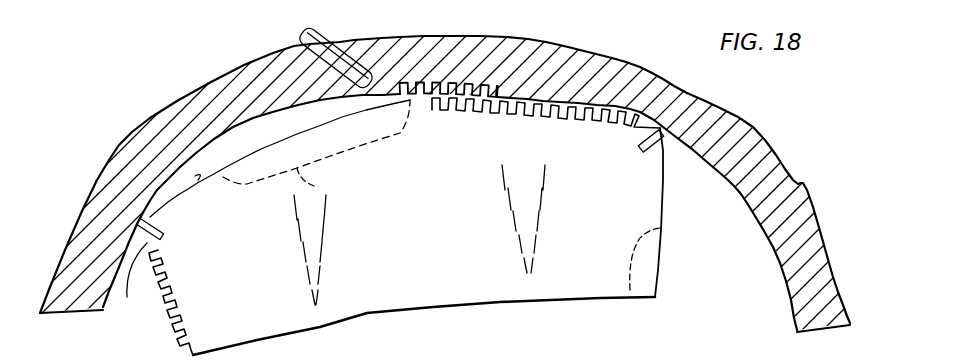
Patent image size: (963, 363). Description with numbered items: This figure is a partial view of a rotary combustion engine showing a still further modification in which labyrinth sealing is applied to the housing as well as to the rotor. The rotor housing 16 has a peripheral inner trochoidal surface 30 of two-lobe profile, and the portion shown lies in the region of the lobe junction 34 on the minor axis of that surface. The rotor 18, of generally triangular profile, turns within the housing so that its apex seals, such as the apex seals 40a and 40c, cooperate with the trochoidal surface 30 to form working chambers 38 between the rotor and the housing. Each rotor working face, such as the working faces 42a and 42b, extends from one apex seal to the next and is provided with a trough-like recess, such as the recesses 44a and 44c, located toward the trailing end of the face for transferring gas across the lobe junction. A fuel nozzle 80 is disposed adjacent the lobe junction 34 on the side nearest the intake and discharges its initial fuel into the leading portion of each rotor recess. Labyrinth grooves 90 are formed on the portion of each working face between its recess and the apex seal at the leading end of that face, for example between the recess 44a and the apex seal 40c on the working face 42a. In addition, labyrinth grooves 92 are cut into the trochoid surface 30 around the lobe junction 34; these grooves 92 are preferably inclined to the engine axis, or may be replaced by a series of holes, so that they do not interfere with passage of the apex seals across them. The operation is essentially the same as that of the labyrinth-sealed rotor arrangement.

The rotor housing 16 is at (658, 82).
The rotor 18 is at (441, 290).
The trochoidal surface 30 is at (767, 240).
The lobe junction 34 is at (457, 88).
The working chamber 38 is at (237, 135).
The apex seal 40a is at (165, 233).
The apex seal 40c is at (646, 150).
The rotor working face 42a is at (200, 177).
The rotor working face 42b is at (132, 289).
The rotor recess 44a is at (330, 186).
The rotor recess 44c is at (644, 262).
The fuel nozzle 80 is at (333, 43).
The labyrinth grooves 90 is at (182, 307).
The labyrinth grooves 92 is at (434, 90).